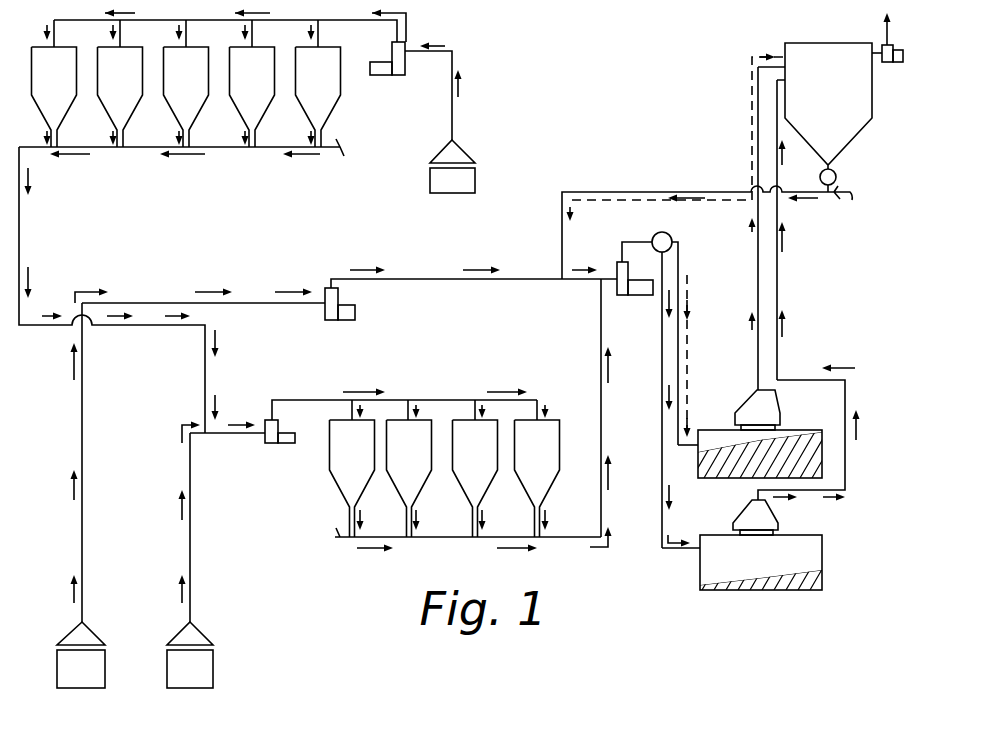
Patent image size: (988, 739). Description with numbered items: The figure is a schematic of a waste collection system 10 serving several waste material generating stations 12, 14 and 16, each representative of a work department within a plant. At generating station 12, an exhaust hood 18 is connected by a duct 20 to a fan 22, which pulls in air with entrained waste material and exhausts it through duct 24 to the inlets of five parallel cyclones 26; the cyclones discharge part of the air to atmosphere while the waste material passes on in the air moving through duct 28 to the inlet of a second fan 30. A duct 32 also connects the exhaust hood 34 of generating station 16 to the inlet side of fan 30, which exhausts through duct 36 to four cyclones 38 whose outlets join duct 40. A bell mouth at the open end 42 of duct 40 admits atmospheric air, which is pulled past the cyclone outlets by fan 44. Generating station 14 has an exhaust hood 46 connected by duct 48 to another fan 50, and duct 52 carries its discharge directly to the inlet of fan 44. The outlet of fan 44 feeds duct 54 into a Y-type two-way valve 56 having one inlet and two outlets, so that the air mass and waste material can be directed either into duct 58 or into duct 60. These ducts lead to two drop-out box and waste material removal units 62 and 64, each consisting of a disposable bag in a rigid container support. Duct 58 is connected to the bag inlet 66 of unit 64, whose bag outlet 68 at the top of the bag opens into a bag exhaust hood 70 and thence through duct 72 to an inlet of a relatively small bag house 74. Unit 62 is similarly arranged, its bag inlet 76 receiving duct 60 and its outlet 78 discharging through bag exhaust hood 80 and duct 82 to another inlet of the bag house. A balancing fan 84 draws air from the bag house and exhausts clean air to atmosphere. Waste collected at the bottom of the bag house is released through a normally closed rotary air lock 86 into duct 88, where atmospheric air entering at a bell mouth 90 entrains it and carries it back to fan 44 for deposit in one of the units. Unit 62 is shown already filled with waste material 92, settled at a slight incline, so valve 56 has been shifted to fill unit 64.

The system 10 is at (668, 40).
The waste material generating station 12 is at (473, 179).
The waste material generating station 14 is at (81, 688).
The waste material generating station 16 is at (214, 669).
The exhaust hood 18 is at (467, 143).
The duct 20 is at (457, 95).
The fan 22 is at (427, 48).
The duct 24 is at (230, 34).
The cyclones 26 is at (205, 83).
The duct 28 is at (181, 291).
The fan 30 is at (277, 456).
The duct 32 is at (216, 527).
The exhaust hood 34 is at (216, 628).
The duct 36 is at (410, 382).
The cyclones 38 is at (445, 478).
The duct 40 is at (588, 432).
The open end 42 is at (454, 564).
The fan 44 is at (614, 263).
The exhaust hood 46 is at (97, 627).
The duct 48 is at (103, 462).
The fan 50 is at (316, 288).
The duct 52 is at (346, 270).
The duct 54 is at (628, 233).
The Y-type two-way valve 56 is at (685, 233).
The duct 58 is at (644, 400).
The duct 60 is at (701, 343).
The drop-out box and waste material removal unit 62 is at (794, 463).
The drop-out box and waste material removal unit 64 is at (757, 584).
The bag inlet 66 is at (677, 578).
The bag outlet 68 is at (740, 513).
The bag exhaust hood 70 is at (780, 515).
The duct 72 is at (828, 433).
The bag house 74 is at (828, 86).
The bag inlet 76 is at (690, 476).
The bag outlet 78 is at (741, 407).
The bag exhaust hood 80 is at (780, 406).
The duct 82 is at (745, 228).
The balancing fan 84 is at (895, 57).
The rotary air lock 86 is at (854, 169).
The duct 88 is at (695, 192).
The bell mouth 90 is at (851, 216).
The waste material 92 is at (782, 454).